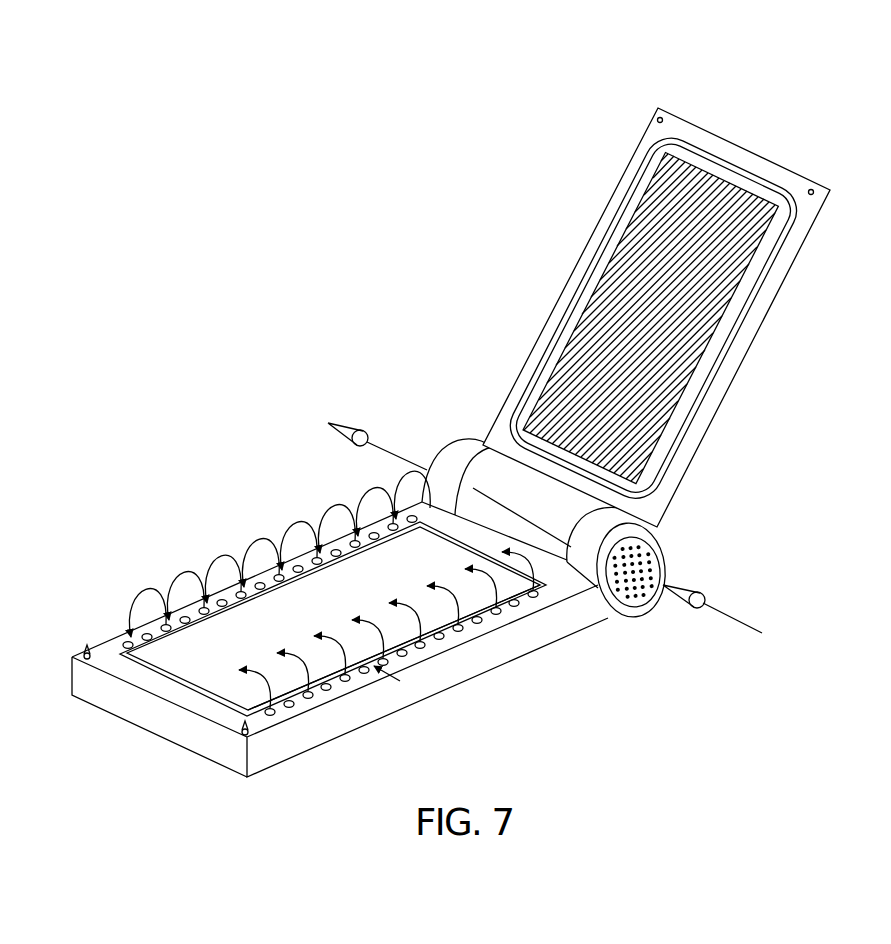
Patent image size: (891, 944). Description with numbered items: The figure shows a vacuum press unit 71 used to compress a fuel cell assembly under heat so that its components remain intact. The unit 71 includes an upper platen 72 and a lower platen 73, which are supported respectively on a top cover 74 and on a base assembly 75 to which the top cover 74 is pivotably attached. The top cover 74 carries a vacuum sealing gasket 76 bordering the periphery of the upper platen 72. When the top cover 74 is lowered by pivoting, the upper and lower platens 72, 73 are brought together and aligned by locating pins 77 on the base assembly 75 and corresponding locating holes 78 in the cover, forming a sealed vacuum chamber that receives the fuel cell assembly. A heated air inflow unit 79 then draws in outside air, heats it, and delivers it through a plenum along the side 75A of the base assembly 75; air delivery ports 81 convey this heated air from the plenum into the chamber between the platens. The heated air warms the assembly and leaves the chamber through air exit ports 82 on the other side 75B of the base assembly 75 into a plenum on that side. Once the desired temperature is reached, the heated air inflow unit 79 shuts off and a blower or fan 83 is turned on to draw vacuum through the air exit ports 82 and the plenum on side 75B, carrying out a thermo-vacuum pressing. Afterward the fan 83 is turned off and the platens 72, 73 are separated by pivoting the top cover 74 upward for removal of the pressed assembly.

The vacuum press unit 71 is at (466, 385).
The upper platen 72 is at (693, 387).
The lower platen 73 is at (427, 650).
The top cover 74 is at (814, 214).
The base assembly 75 is at (268, 747).
The side of the base assembly 75A is at (490, 648).
The other side of the base assembly 75B is at (250, 581).
The vacuum sealing gasket 76 is at (736, 346).
The locating pins 77 is at (86, 650).
The locating holes 78 is at (661, 111).
The heated air inflow unit 79 is at (648, 548).
The air delivery ports 81 is at (337, 686).
The air exit ports 82 is at (168, 624).
The blower or fan 83 is at (462, 460).